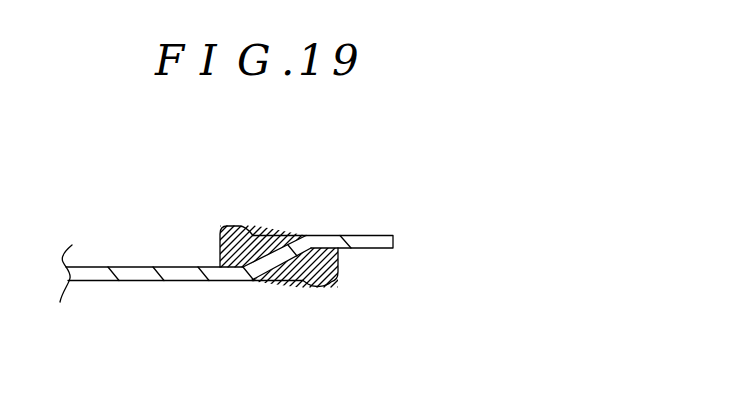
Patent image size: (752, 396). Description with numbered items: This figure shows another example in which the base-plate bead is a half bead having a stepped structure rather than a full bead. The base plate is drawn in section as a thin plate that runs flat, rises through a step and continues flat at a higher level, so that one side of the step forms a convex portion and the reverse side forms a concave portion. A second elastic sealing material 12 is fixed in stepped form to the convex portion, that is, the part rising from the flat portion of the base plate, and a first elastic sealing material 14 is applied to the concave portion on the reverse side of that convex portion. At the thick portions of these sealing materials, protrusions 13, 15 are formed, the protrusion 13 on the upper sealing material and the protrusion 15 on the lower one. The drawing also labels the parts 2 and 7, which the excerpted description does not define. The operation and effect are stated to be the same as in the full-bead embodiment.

The bus bar 2 is at (371, 236).
The terminal plate 7 is at (293, 235).
The second elastic sealing material 12 is at (252, 228).
The protrusion 13 is at (220, 236).
The first elastic sealing material 14 is at (278, 282).
The protrusion 15 is at (332, 283).